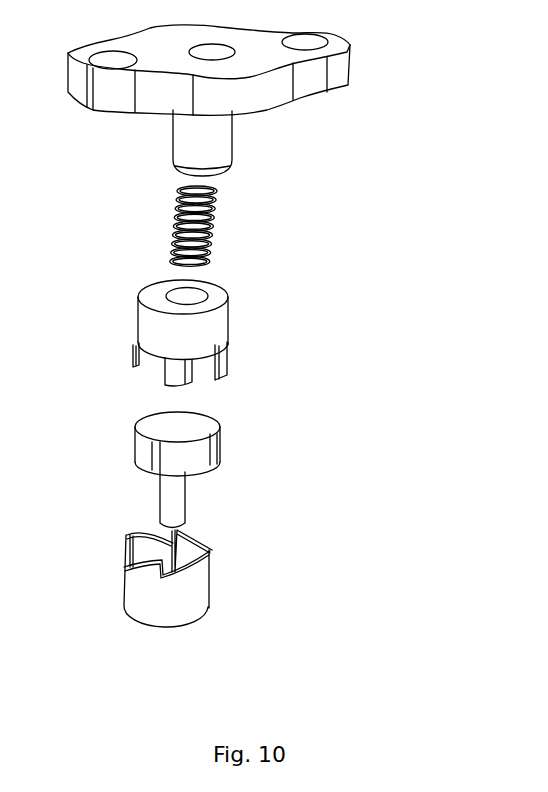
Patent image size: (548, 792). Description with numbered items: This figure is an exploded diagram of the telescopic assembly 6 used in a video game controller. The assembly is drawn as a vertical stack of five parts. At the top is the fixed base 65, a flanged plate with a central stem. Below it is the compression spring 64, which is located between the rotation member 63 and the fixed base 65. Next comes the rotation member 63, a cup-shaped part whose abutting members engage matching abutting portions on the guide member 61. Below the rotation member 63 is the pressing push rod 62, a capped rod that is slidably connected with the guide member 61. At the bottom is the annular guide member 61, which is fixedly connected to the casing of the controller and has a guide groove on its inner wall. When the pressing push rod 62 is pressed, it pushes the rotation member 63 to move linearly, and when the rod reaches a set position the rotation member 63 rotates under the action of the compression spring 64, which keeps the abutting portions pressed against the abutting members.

The telescopic assembly 6 is at (392, 196).
The guide member 61 is at (190, 600).
The pressing push rod 62 is at (195, 458).
The rotation member 63 is at (213, 342).
The compression spring 64 is at (200, 232).
The fixed base 65 is at (210, 127).